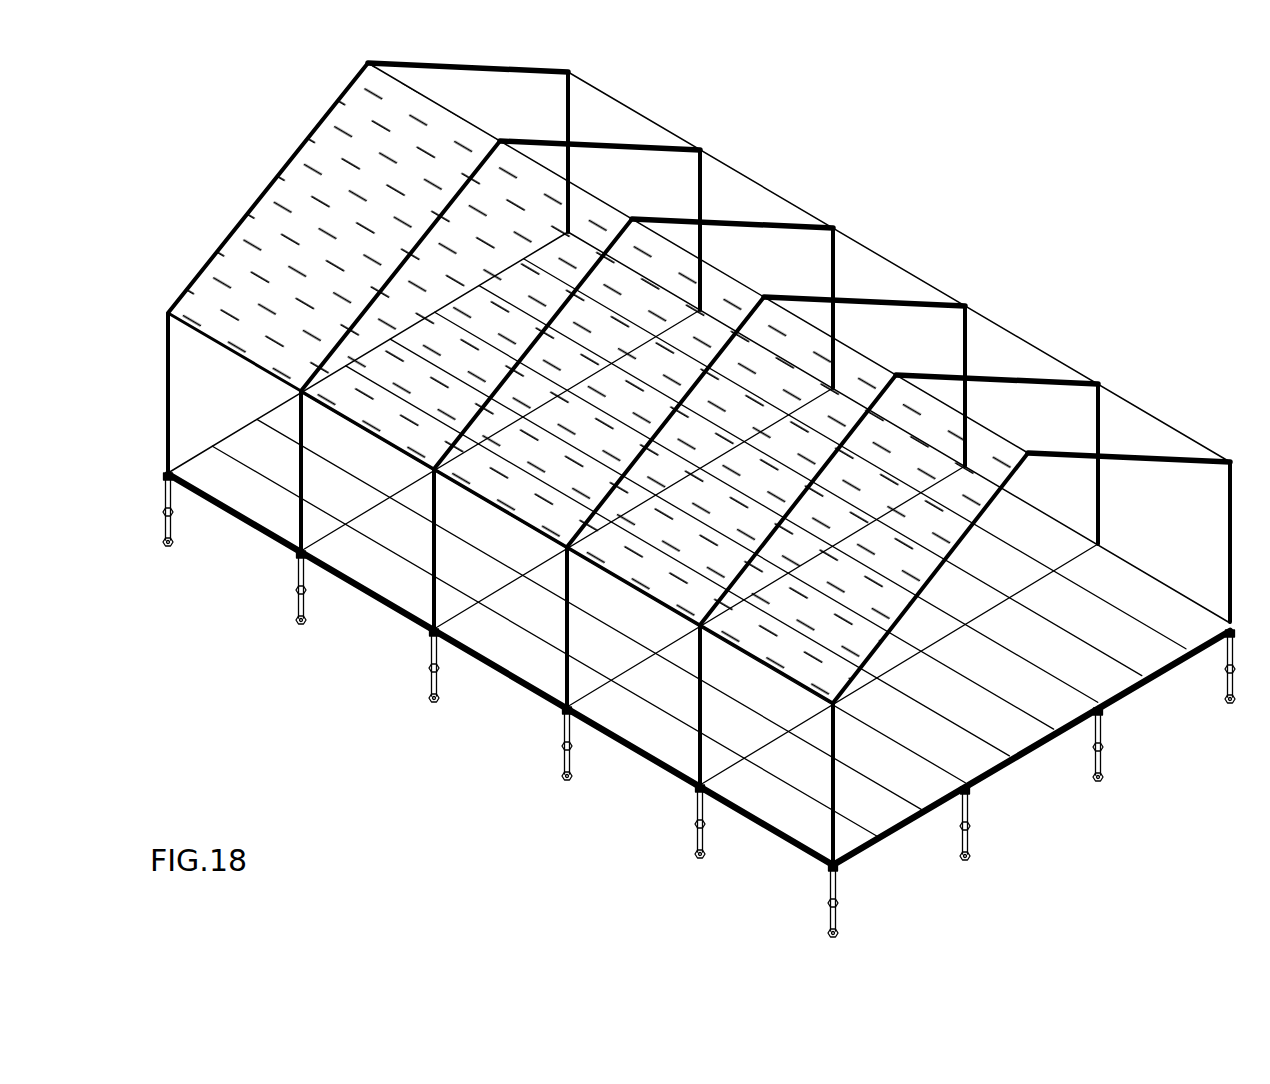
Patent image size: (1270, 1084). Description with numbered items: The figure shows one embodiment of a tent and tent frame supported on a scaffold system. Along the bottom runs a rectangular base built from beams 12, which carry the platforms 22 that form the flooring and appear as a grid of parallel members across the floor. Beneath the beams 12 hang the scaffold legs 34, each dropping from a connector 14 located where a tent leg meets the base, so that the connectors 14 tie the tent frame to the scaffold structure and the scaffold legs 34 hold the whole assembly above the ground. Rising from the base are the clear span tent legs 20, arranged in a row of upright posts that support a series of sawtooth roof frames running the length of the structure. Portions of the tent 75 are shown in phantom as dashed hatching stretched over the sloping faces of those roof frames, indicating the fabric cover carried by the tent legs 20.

The beam 12 is at (773, 832).
The connector 14 is at (583, 693).
The tent legs 20 is at (1232, 512).
The platforms 22 is at (1128, 692).
The scaffold legs 34 is at (696, 800).
The tent 75 is at (345, 93).